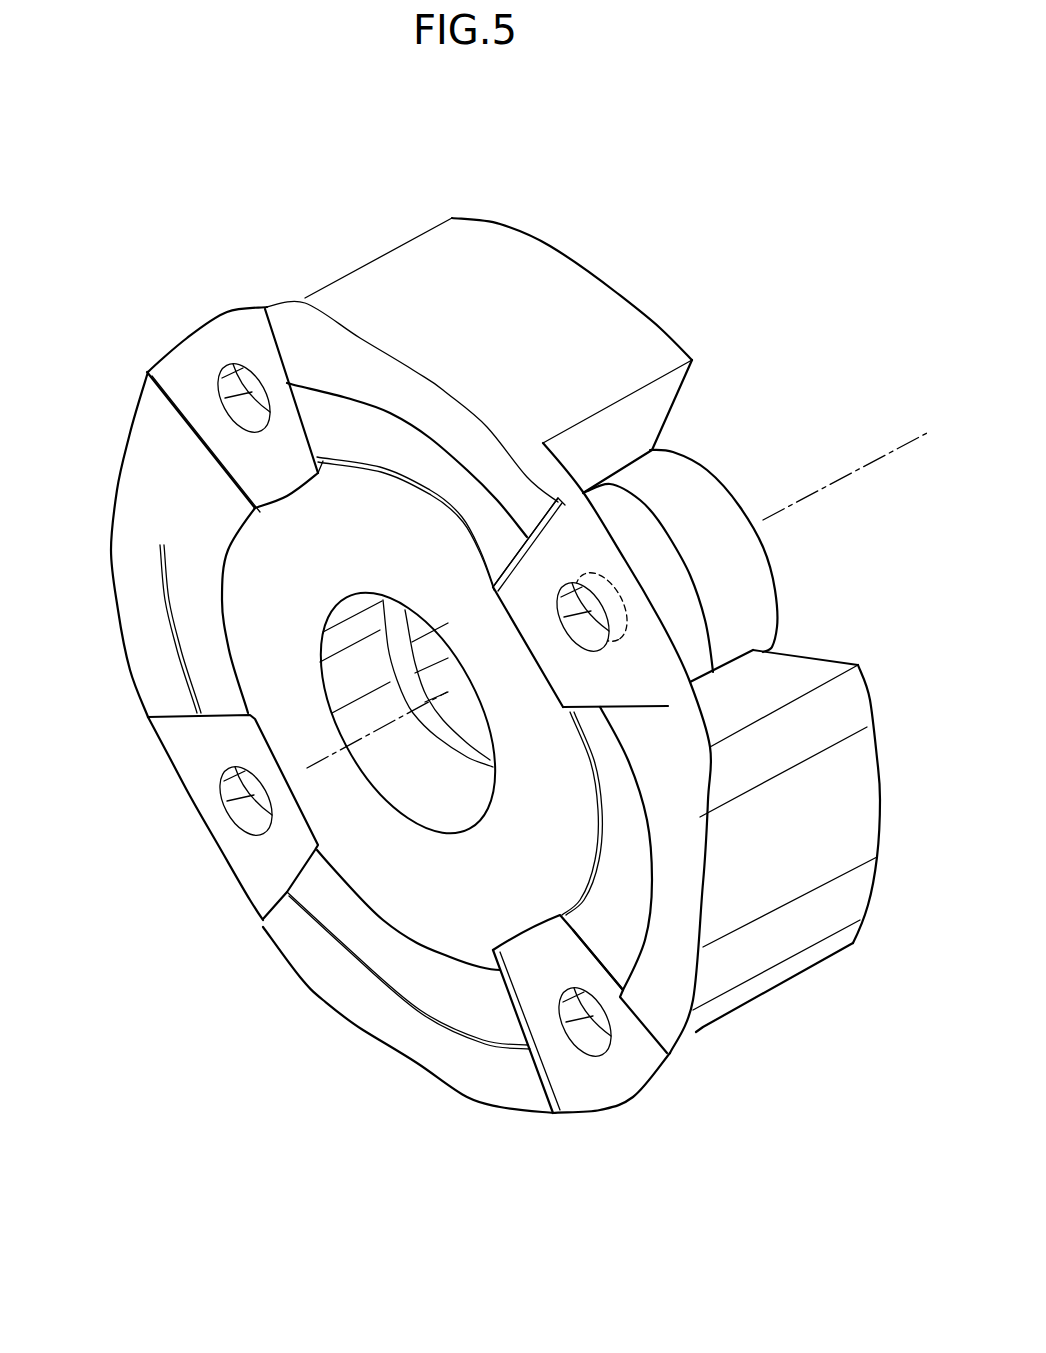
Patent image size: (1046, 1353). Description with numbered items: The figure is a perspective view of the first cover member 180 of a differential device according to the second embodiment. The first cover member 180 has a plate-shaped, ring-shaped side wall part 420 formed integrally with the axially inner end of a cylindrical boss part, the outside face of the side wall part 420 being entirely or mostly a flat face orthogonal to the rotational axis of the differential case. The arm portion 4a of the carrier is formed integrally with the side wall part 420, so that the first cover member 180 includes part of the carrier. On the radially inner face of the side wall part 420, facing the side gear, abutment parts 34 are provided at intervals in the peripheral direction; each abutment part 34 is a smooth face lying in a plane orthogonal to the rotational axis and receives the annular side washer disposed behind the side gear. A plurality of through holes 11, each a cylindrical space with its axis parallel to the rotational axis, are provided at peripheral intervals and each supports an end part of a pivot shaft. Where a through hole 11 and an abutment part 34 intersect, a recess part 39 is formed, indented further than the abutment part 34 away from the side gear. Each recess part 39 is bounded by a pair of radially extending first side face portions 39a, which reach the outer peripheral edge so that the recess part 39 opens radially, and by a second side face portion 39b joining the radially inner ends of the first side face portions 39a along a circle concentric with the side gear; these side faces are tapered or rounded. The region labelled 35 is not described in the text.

The arm portion 4a is at (587, 283).
The through hole 11 is at (247, 390).
The abutment part 34 is at (393, 438).
The flat face 35 is at (774, 698).
The recess part 39 is at (178, 397).
The first side face portion 39a is at (535, 523).
The second side face portion 39b is at (530, 650).
The first cover member 180 is at (777, 447).
The side wall part 420 is at (472, 1080).